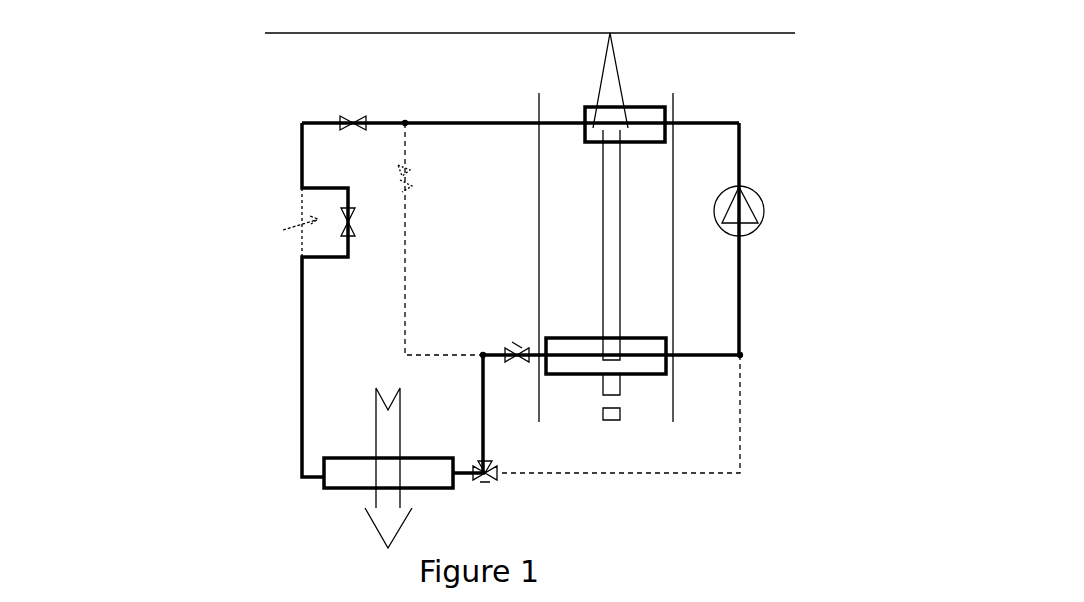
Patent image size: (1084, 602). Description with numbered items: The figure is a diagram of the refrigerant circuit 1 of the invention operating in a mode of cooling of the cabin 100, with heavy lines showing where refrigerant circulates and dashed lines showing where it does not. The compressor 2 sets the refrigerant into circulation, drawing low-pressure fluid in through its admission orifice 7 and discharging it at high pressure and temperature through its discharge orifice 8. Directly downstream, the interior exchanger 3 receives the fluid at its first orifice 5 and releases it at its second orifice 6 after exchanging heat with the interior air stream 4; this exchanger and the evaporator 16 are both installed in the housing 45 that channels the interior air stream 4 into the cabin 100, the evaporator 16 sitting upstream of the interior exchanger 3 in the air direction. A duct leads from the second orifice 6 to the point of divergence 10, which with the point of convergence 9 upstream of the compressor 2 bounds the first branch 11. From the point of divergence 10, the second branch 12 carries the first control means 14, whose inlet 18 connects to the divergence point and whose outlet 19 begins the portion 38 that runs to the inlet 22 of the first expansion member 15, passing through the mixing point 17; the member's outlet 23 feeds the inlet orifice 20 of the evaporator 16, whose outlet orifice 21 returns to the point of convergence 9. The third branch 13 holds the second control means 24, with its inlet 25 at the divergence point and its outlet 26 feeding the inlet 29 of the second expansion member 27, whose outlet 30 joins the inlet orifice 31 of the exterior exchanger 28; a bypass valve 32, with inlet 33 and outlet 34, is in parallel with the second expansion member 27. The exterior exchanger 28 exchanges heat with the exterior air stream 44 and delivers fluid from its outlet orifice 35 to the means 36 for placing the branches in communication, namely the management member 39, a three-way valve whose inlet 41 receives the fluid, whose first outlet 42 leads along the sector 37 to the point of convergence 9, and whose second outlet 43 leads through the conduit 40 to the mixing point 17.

The circuit 1 is at (176, 134).
The cabin 100 is at (768, 38).
The compressor 2 is at (764, 210).
The interior exchanger 3 is at (648, 115).
The interior air stream 4 is at (612, 60).
The first orifice 5 is at (668, 122).
The second orifice 6 is at (585, 122).
The admission orifice 7 is at (752, 232).
The discharge orifice 8 is at (741, 188).
The point of convergence 9 is at (742, 357).
The point of divergence 10 is at (412, 121).
The first branch 11 is at (752, 126).
The second branch 12 is at (440, 306).
The third branch 13 is at (315, 400).
The first control means 14 is at (412, 172).
The first expansion member 15 is at (517, 348).
The evaporator 16 is at (642, 345).
The mixing point 17 is at (483, 350).
The inlet 18 is at (410, 164).
The outlet 19 is at (411, 186).
The inlet orifice 20 is at (548, 355).
The outlet orifice 21 is at (668, 350).
The inlet 22 is at (505, 362).
The outlet 23 is at (526, 362).
The second control means 24 is at (353, 118).
The inlet 25 is at (360, 120).
The outlet 26 is at (340, 121).
The second expansion member 27 is at (300, 222).
The exterior exchanger 28 is at (345, 487).
The inlet 29 is at (300, 205).
The outlet 30 is at (300, 238).
The inlet orifice 31 is at (320, 478).
The bypass valve 32 is at (356, 212).
The inlet 33 is at (352, 210).
The outlet 34 is at (350, 237).
The outlet orifice 35 is at (455, 482).
The means for placing in communication 36 is at (475, 430).
The sector 37 is at (630, 479).
The portion 38 is at (403, 312).
The management member 39 is at (498, 478).
The conduit 40 is at (481, 398).
The inlet 41 is at (478, 468).
The first outlet 42 is at (500, 470).
The second outlet 43 is at (490, 465).
The exterior air stream 44 is at (392, 522).
The housing 45 is at (675, 300).